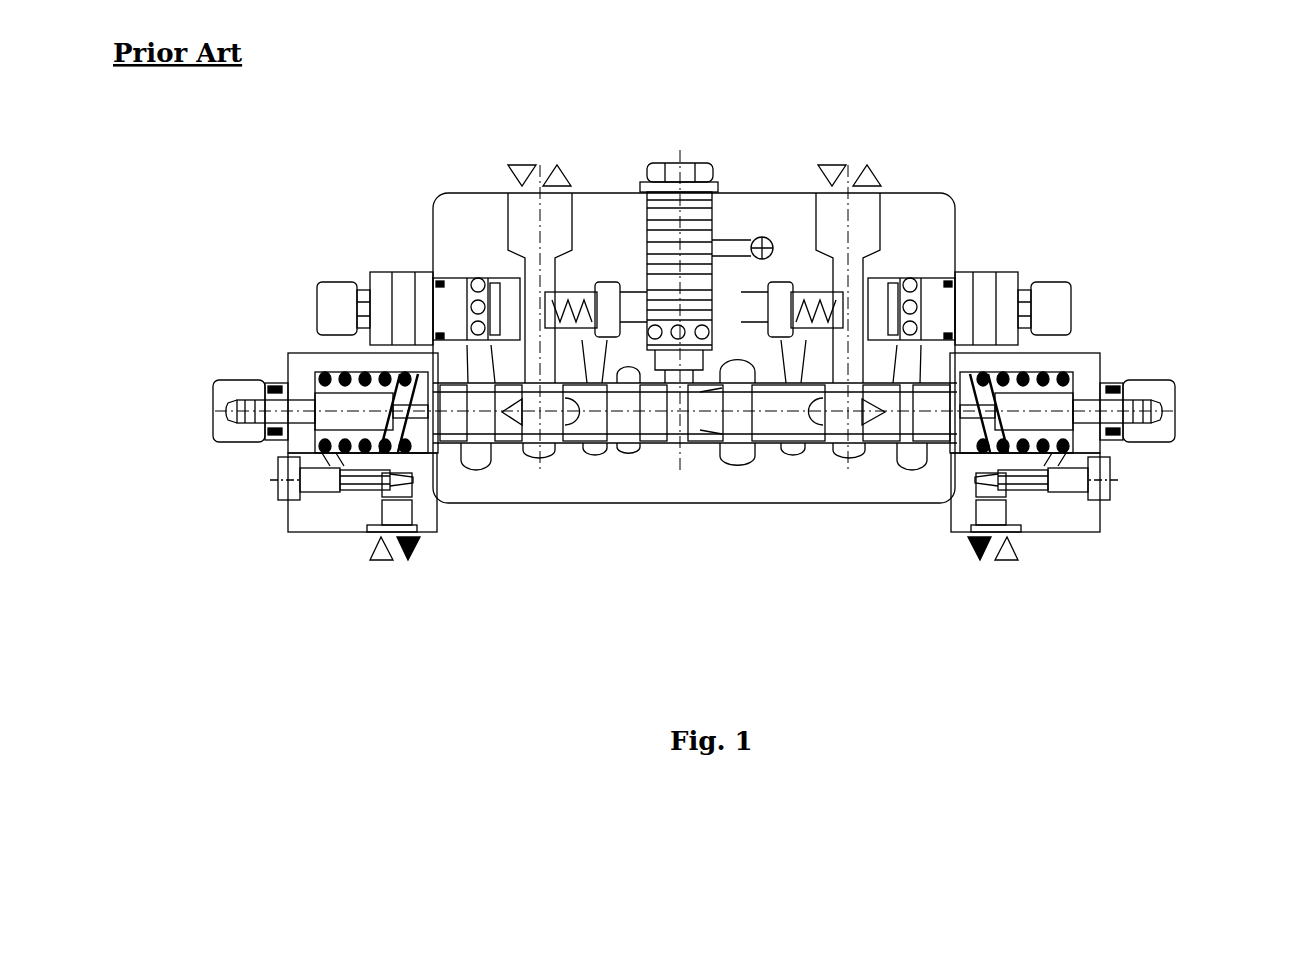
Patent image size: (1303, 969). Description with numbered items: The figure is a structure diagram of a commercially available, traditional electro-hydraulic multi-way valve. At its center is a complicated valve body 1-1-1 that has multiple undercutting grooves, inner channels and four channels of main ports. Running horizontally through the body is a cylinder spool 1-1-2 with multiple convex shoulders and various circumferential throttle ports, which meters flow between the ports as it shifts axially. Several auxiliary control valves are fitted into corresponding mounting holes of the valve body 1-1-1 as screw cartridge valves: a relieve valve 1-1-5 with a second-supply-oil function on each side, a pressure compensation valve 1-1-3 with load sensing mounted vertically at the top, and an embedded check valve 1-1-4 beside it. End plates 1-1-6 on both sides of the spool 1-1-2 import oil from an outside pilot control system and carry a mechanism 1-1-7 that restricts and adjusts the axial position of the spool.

The valve body 1-1-1 is at (917, 203).
The cylinder spool 1-1-2 is at (778, 437).
The pressure compensation valve 1-1-3 is at (683, 165).
The embedded check valve 1-1-4 is at (760, 287).
The relieve valve 1-1-5 is at (330, 300).
The end plate 1-1-6 is at (337, 530).
The mechanism 1-1-7 is at (268, 412).